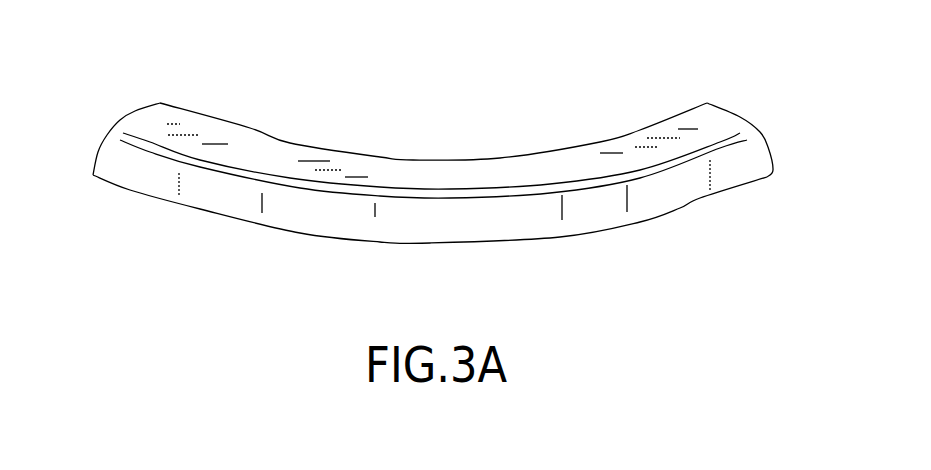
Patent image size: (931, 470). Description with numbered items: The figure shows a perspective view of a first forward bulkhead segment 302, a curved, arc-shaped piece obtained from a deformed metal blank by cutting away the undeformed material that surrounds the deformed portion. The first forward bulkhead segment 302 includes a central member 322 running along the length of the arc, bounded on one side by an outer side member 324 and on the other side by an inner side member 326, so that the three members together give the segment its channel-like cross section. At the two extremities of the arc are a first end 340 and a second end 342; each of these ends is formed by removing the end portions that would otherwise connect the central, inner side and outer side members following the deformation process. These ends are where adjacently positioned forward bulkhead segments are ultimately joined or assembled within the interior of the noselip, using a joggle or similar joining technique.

The first forward bulkhead segment 302 is at (436, 130).
The central member 322 is at (370, 177).
The outer side member 324 is at (150, 180).
The inner side member 326 is at (573, 146).
The first end 340 is at (122, 118).
The second end 342 is at (747, 120).